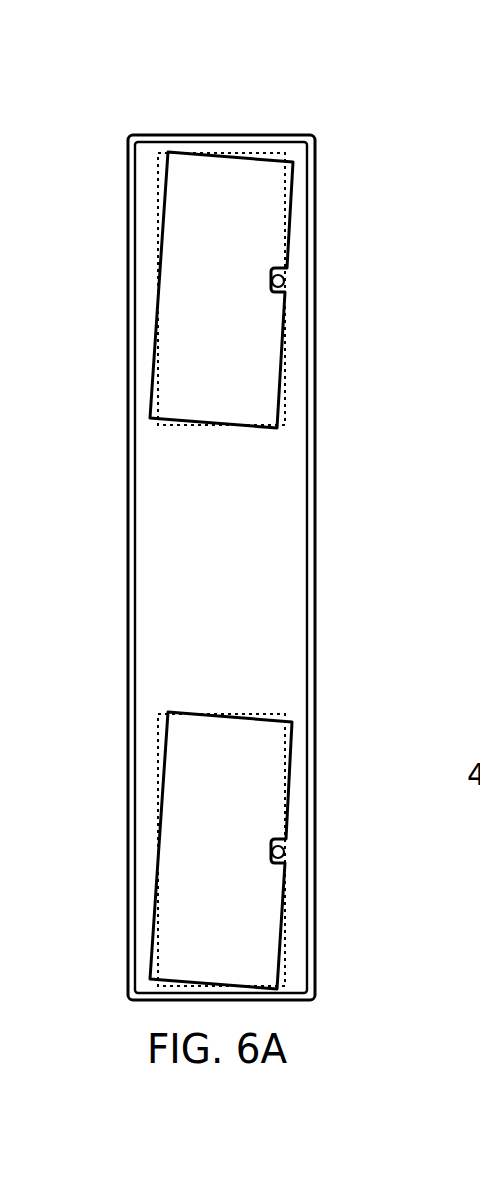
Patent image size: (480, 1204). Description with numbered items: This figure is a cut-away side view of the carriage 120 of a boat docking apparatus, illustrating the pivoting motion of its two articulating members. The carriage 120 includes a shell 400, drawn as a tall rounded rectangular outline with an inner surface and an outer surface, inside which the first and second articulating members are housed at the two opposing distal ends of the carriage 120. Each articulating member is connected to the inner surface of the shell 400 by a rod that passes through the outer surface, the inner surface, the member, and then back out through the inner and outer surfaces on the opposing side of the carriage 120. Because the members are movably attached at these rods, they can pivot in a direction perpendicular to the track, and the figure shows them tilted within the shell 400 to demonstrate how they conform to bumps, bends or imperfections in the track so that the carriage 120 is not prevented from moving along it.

The carriage 120 is at (160, 120).
The shell 400 is at (128, 553).